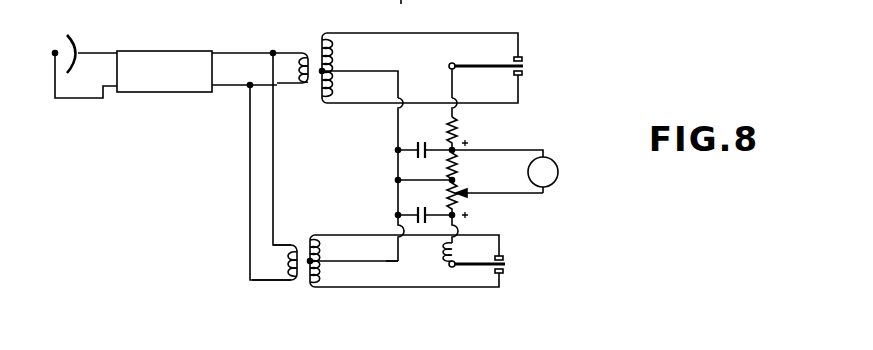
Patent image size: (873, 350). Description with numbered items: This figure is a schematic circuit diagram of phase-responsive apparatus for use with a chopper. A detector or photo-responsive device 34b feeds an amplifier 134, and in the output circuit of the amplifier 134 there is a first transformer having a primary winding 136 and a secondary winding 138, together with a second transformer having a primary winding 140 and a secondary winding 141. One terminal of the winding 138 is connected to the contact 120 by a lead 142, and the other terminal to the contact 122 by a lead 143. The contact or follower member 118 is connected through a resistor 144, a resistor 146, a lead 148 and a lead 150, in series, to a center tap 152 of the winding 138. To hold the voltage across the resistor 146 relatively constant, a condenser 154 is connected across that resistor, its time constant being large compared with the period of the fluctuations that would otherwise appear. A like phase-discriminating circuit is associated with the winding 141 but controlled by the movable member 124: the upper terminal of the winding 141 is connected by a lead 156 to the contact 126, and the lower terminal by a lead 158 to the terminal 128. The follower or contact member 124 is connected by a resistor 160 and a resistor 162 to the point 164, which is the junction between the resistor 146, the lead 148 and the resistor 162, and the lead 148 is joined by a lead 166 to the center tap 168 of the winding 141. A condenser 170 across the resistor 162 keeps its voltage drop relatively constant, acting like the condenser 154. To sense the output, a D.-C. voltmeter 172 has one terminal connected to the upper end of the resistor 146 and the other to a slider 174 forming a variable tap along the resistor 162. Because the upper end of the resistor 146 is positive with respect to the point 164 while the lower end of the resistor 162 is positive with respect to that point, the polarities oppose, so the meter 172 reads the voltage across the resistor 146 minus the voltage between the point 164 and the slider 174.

The photo-responsive device 34b is at (77, 44).
The amplifier 134 is at (158, 50).
The primary winding 136 is at (298, 48).
The secondary winding 138 is at (324, 34).
The lead 142 is at (507, 32).
The lead 143 is at (503, 104).
The center tap 152 is at (330, 64).
The follower member 118 is at (478, 63).
The contact 120 is at (522, 57).
The contact 122 is at (525, 69).
The lead 150 is at (397, 122).
The resistor 144 is at (458, 131).
The condenser 154 is at (427, 146).
The resistor 146 is at (458, 166).
The point 164 is at (447, 172).
The lead 148 is at (425, 181).
The resistor 162 is at (458, 210).
The slider 174 is at (472, 191).
The D.-C. voltmeter 172 is at (558, 170).
The condenser 170 is at (425, 226).
The resistor 160 is at (460, 252).
The movable member 124 is at (482, 268).
The contact 126 is at (503, 251).
The terminal 128 is at (508, 265).
The lead 156 is at (382, 234).
The lead 158 is at (383, 286).
The primary winding 140 is at (293, 273).
The secondary winding 141 is at (318, 292).
The center tap 168 is at (317, 276).
The lead 166 is at (386, 256).